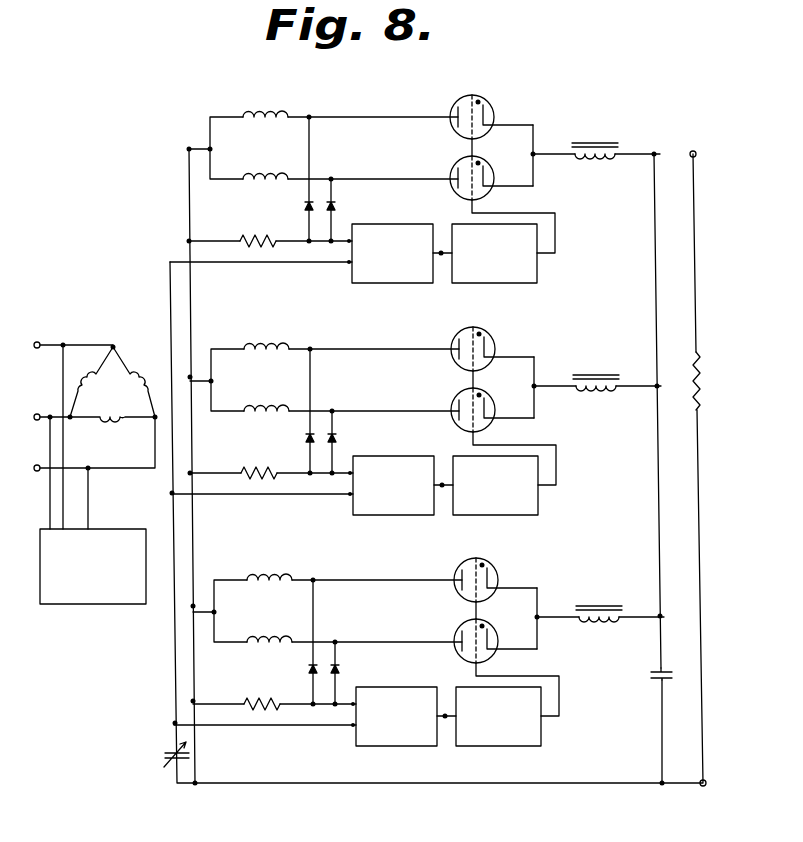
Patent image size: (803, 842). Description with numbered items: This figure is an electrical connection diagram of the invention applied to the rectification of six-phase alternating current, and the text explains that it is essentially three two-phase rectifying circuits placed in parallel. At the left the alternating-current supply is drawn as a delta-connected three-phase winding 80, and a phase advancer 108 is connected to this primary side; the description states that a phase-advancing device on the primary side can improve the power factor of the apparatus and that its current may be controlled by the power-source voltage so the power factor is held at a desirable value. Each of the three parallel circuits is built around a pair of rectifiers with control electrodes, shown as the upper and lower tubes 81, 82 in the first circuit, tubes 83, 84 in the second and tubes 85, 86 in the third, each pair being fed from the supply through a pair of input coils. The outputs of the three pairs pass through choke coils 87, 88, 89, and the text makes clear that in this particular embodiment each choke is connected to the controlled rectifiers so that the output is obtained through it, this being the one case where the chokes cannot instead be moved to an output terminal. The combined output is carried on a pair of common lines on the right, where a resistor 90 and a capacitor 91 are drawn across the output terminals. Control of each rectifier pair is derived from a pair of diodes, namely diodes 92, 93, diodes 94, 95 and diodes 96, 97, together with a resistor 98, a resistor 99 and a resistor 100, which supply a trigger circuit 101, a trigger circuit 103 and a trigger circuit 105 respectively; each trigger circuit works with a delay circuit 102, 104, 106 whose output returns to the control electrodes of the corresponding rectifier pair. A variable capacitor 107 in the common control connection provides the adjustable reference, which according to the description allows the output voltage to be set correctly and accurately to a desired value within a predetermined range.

The delta-connected three-phase source winding 80 is at (155, 378).
The gas tube 81 is at (490, 107).
The gas tube 82 is at (454, 166).
The gas tube 83 is at (487, 350).
The gas tube 84 is at (481, 404).
The gas tube 85 is at (484, 583).
The gas tube 86 is at (483, 636).
The transformer 87 is at (599, 142).
The transformer 88 is at (596, 368).
The transformer 89 is at (599, 599).
The resistor 90 is at (702, 394).
The capacitor 91 is at (655, 675).
The diode 92 is at (304, 207).
The diode 93 is at (336, 207).
The diode 94 is at (293, 440).
The diode 95 is at (345, 440).
The diode 96 is at (296, 671).
The diode 97 is at (349, 671).
The resistor 98 is at (257, 237).
The resistor 99 is at (257, 460).
The resistor 100 is at (258, 691).
The trigger circuit 101 is at (399, 283).
The delay circuit 102 is at (499, 283).
The trigger circuit 103 is at (393, 498).
The delay circuit 104 is at (495, 498).
The trigger circuit 105 is at (396, 729).
The delay circuit 106 is at (498, 729).
The variable capacitor 107 is at (165, 756).
The phase advancer 108 is at (96, 605).